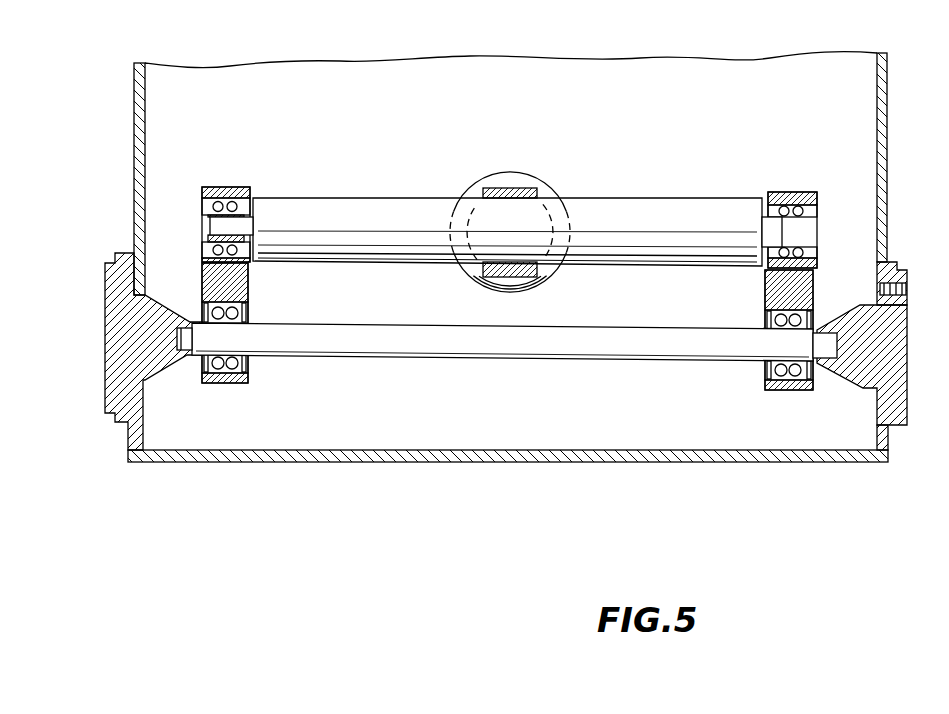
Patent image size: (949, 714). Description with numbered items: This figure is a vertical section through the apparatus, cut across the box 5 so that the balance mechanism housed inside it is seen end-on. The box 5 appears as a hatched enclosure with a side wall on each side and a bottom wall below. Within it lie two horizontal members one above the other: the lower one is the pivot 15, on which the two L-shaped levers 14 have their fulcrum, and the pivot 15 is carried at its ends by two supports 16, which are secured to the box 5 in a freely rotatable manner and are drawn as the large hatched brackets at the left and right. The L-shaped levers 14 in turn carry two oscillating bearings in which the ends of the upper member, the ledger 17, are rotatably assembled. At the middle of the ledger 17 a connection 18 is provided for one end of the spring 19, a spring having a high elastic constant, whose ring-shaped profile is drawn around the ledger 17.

The box 5 is at (498, 463).
The L-shaped levers 14 is at (228, 385).
The pivot 15 is at (590, 353).
The supports 16 is at (165, 362).
The ledger 17 is at (638, 212).
The connection 18 is at (500, 188).
The spring 19 is at (527, 178).